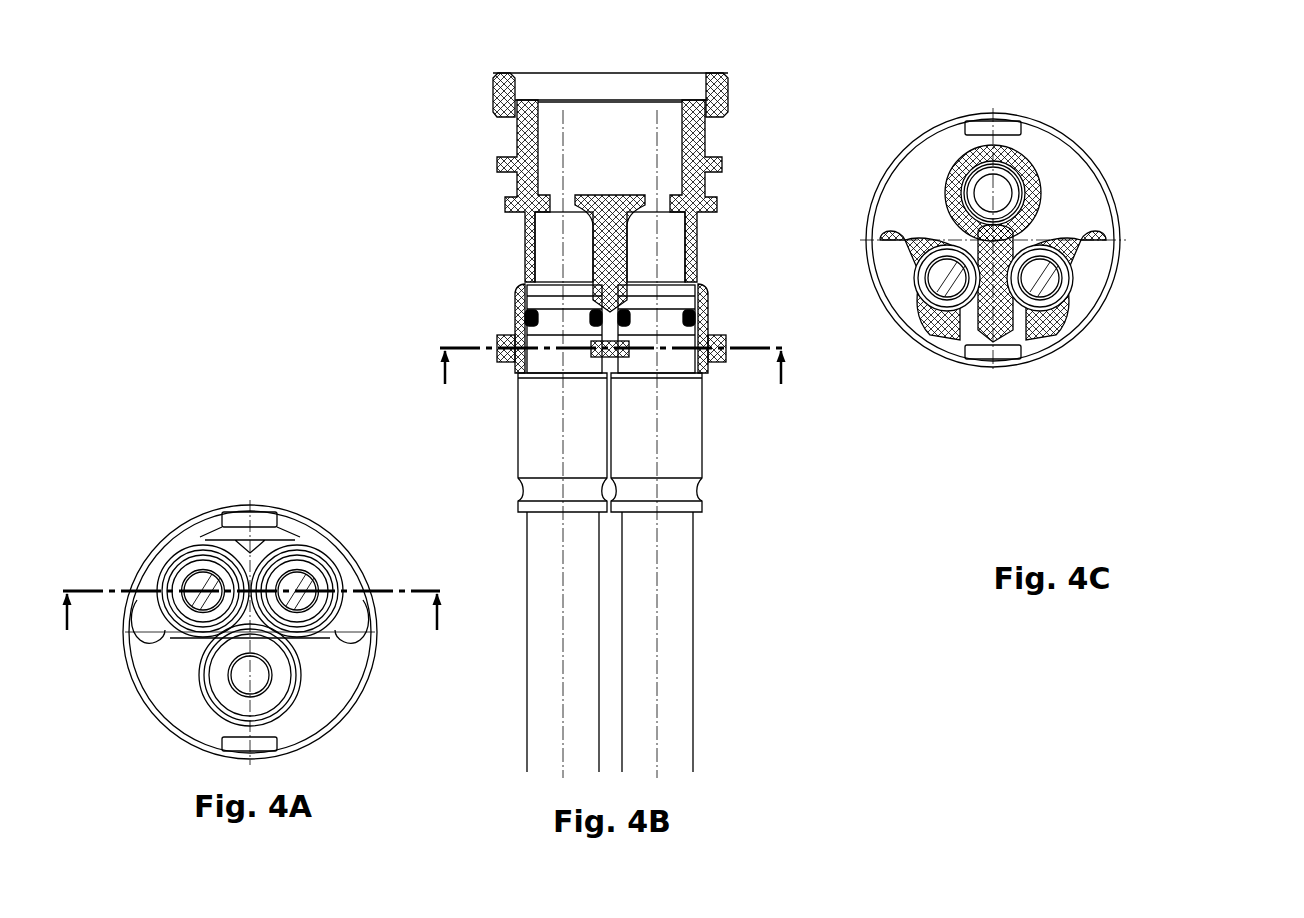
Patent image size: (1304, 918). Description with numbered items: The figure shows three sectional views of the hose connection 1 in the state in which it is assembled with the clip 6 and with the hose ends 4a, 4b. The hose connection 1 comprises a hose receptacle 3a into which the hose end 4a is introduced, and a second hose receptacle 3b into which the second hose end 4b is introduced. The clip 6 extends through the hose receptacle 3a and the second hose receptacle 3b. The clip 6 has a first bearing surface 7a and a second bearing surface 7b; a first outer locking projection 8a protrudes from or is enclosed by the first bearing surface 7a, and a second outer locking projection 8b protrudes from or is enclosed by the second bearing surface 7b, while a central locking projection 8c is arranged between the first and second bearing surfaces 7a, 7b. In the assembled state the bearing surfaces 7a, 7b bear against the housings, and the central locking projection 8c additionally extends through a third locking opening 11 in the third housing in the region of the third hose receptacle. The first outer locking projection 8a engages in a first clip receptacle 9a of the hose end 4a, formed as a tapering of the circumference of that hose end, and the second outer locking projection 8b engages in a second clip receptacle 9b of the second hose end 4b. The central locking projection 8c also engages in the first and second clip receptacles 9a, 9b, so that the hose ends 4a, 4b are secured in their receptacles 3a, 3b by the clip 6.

In FIG. 4C, the hose connection 1 is at (1063, 277).
In FIG. 4B, the hose receptacle 3a is at (555, 277).
In FIG. 4B, the second hose receptacle 3b is at (662, 277).
In FIG. 4B, the hose end 4a is at (530, 452).
In FIG. 4B, the second hose end 4b is at (668, 447).
In FIG. 4A, the clip 6 is at (210, 532).
In FIG. 4C, the clip 6 is at (1115, 305).
In FIG. 4A, the first bearing surface 7a is at (155, 582).
In FIG. 4A, the second bearing surface 7b is at (295, 548).
In FIG. 4C, the first outer locking projection 8a is at (905, 300).
In FIG. 4C, the second outer locking projection 8b is at (1075, 300).
In FIG. 4C, the central locking projection 8c is at (1003, 300).
In FIG. 4B, the first clip receptacle 9a is at (530, 318).
In FIG. 4B, the second clip receptacle 9b is at (668, 317).
In FIG. 4C, the third locking opening 11 is at (970, 232).